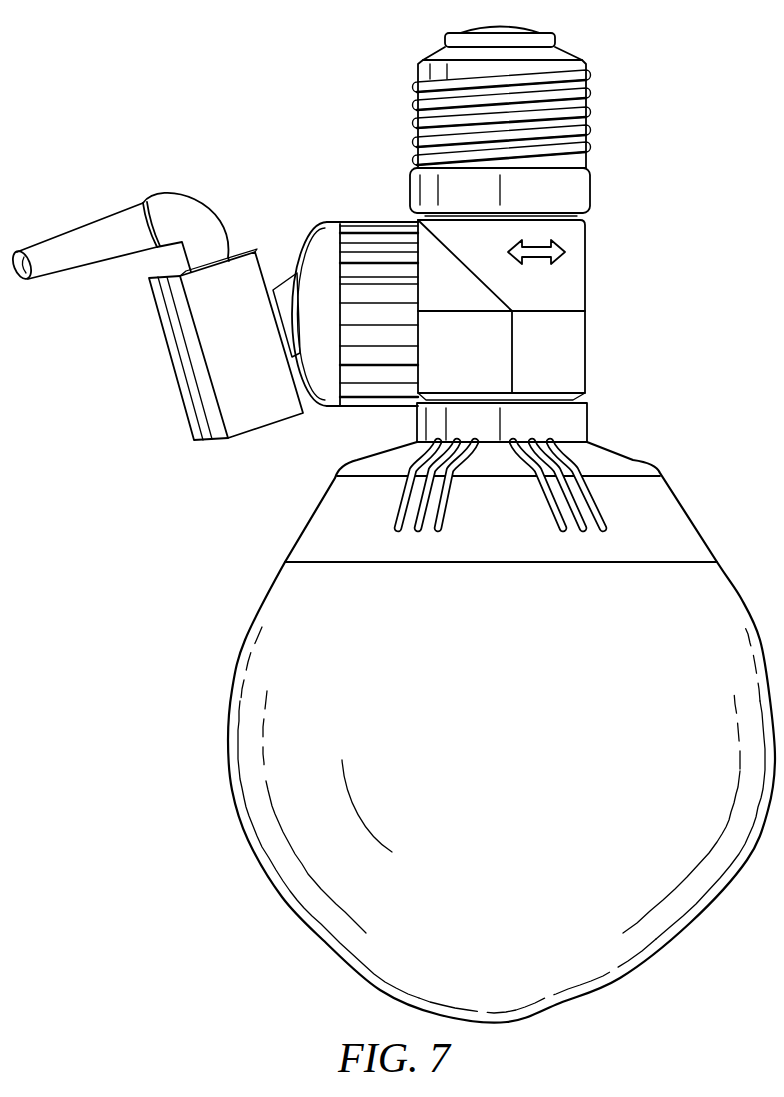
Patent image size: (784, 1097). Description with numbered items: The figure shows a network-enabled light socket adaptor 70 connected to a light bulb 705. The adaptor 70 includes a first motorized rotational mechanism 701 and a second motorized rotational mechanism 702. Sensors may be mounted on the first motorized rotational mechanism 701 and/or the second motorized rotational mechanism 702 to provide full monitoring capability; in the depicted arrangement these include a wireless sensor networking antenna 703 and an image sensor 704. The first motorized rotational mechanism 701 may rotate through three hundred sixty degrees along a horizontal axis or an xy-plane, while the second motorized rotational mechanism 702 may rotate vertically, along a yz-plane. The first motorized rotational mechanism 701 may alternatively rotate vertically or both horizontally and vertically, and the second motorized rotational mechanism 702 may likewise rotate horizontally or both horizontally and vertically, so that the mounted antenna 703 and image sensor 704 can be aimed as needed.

The network-enabled light socket adaptor 70 is at (392, 525).
The first motorized rotational mechanism 701 is at (586, 262).
The second motorized rotational mechanism 702 is at (273, 241).
The wireless sensor networking antenna 703 is at (100, 217).
The image sensor 704 is at (173, 378).
The light bulb 705 is at (256, 614).